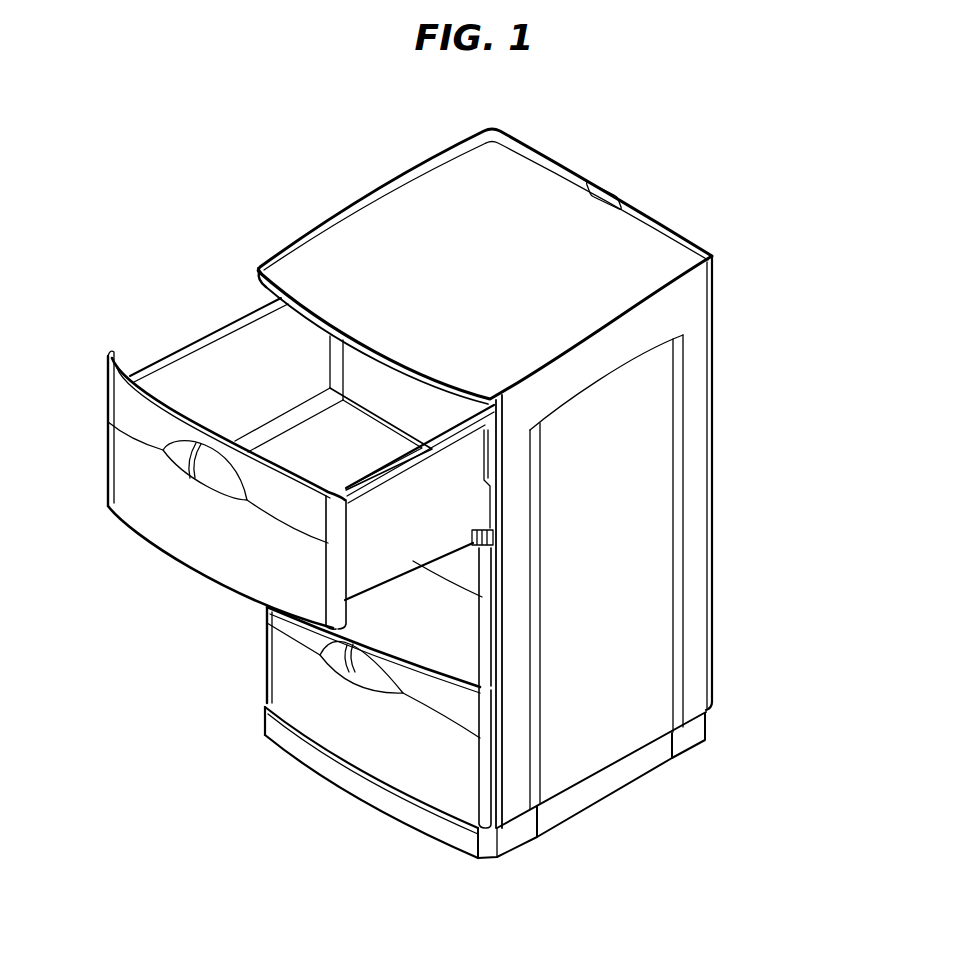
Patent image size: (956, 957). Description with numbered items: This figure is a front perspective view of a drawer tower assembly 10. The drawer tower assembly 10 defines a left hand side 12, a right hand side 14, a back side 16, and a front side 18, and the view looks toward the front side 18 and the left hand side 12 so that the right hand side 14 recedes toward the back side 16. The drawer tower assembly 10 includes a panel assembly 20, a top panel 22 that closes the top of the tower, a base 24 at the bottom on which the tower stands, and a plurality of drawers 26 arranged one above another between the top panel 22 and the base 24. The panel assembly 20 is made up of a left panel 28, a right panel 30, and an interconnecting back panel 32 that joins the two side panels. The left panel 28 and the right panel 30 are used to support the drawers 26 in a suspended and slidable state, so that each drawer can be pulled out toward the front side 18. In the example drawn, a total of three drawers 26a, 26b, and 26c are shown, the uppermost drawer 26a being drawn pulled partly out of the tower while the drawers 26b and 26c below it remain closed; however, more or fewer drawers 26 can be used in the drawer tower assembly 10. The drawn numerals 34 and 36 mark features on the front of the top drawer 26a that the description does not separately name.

The drawer tower assembly 10 is at (780, 268).
The left hand side 12 is at (278, 217).
The right hand side 14 is at (745, 566).
The back side 16 is at (600, 155).
The front side 18 is at (203, 716).
The panel assembly 20 is at (402, 160).
The top panel 22 is at (260, 270).
The base 24 is at (690, 746).
The drawers 26 is at (108, 462).
The first drawer 26a is at (108, 489).
The second drawer 26b is at (486, 540).
The third drawer 26c is at (262, 668).
The left panel 28 is at (365, 190).
The right panel 30 is at (685, 279).
The back panel 32 is at (655, 210).
The drawer front panel 34 is at (122, 391).
The handle 36 is at (176, 460).